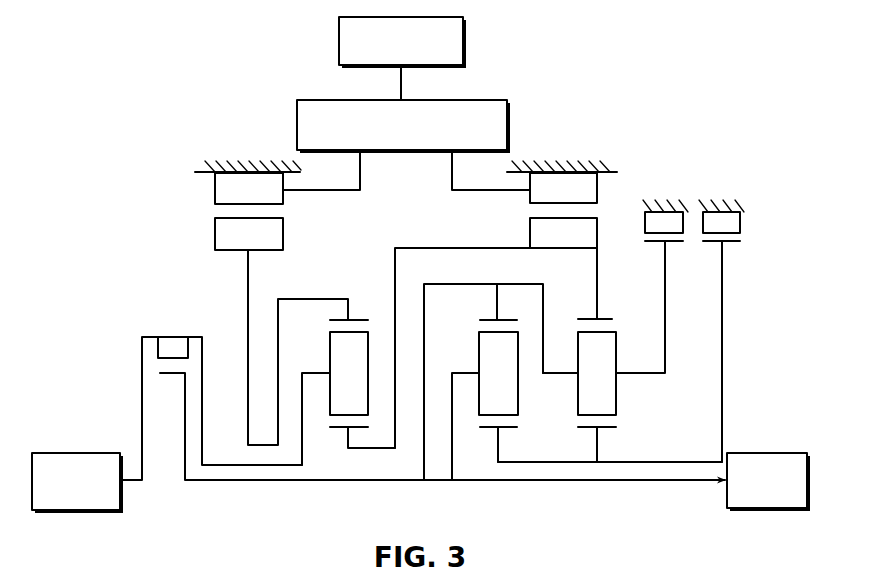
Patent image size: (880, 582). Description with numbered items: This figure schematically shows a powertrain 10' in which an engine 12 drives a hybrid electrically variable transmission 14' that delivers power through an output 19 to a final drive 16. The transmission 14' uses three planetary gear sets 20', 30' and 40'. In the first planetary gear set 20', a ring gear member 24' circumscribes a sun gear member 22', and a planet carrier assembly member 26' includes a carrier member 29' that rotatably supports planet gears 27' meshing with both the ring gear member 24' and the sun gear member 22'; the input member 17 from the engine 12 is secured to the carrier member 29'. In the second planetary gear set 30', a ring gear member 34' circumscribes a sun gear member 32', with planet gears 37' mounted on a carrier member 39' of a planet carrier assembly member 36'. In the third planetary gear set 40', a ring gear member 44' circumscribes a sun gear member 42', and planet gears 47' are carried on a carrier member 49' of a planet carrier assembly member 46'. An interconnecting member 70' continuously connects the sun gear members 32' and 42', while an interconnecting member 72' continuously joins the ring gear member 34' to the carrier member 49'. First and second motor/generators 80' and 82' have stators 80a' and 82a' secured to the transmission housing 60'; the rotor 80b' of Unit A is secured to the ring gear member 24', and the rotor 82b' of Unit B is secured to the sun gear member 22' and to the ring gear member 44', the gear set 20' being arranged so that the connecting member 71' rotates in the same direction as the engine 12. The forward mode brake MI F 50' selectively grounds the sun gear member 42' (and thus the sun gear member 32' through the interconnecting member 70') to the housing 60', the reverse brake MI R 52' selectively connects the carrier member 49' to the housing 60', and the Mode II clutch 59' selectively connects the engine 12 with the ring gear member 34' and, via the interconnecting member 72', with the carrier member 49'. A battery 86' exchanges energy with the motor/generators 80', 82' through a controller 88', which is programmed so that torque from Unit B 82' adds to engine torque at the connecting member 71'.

The powertrain 10' is at (83, 98).
The transmission 14' is at (87, 212).
The engine 12 is at (95, 452).
The final drive 16 is at (781, 453).
The input member 17 is at (142, 384).
The output shaft 19 is at (699, 482).
The planetary gear set 20' is at (420, 381).
The sun gear member 22' is at (353, 471).
The ring gear member 24' is at (314, 347).
The planet carrier assembly member 26' is at (301, 445).
The planet gears 27' is at (349, 373).
The carrier member 29' is at (314, 400).
The planetary gear set 30' is at (511, 471).
The sun gear member 32' is at (484, 471).
The ring gear member 34' is at (506, 288).
The planet carrier assembly member 36' is at (451, 445).
The planet gears 37' is at (498, 373).
The carrier member 39' is at (460, 407).
The planetary gear set 40' is at (616, 471).
The sun gear member 42' is at (612, 471).
The ring gear member 44' is at (617, 315).
The planet carrier assembly member 46' is at (648, 398).
The planet gears 47' is at (597, 373).
The carrier member 49' is at (557, 394).
The forward mode brake MI F 50' is at (746, 334).
The reverse brake MI R 52' is at (644, 289).
The clutch 59' is at (168, 383).
The transmission housing 60' is at (443, 166).
The interconnecting member 70' is at (610, 488).
The connecting member 71' is at (627, 283).
The interconnecting member 72' is at (500, 368).
The first motor/generator 80' is at (214, 211).
The stator 80a' is at (249, 188).
The rotor 80b' is at (220, 234).
The second motor/generator 82' is at (559, 221).
The stator 82a' is at (563, 188).
The rotor 82b' is at (593, 244).
The battery 86' is at (373, 42).
The controller 88' is at (374, 126).